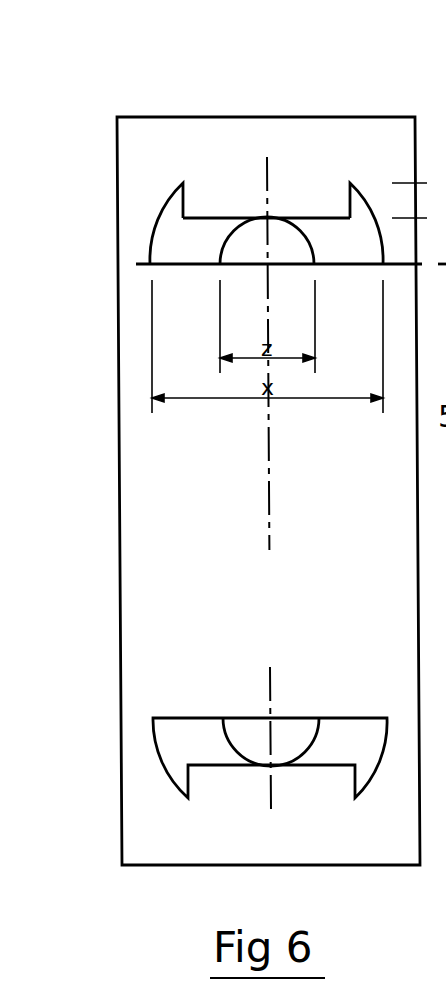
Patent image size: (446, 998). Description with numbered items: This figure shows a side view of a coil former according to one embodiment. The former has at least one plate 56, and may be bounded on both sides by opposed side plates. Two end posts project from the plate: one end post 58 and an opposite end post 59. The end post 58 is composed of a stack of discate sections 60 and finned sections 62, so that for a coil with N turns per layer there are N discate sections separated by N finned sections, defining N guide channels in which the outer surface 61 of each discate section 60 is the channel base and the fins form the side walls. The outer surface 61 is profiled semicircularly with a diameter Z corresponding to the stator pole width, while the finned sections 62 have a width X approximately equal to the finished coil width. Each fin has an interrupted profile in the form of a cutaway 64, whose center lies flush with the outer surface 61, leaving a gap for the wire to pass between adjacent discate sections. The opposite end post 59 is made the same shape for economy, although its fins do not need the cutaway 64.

The plate 56 is at (135, 193).
The end post 58 is at (291, 206).
The opposite end post 59 is at (333, 707).
The discate section 60 is at (262, 240).
The outer surface 61 is at (305, 234).
The finned section 62 is at (210, 233).
The cutaway 64 is at (217, 212).